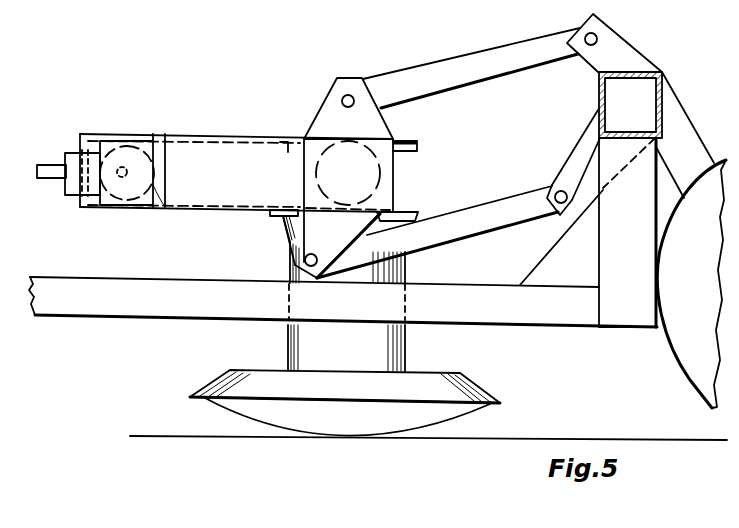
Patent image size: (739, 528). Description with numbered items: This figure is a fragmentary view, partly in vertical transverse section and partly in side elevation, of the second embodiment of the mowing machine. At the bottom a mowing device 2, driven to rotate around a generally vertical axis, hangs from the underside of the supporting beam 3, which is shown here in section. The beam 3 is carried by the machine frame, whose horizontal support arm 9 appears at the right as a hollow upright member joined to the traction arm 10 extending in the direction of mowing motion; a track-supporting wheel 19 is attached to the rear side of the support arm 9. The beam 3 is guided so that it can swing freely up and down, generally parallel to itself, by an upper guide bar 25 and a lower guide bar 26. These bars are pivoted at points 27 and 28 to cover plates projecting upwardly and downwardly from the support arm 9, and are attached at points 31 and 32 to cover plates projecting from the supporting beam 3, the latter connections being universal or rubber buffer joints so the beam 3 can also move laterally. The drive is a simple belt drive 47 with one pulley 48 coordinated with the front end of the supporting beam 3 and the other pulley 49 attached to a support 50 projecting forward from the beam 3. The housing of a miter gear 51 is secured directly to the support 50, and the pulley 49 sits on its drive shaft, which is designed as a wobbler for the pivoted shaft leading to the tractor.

The mowing device 2 is at (458, 375).
The supporting beam 3 is at (387, 164).
The support arm 9 is at (660, 100).
The traction arm 10 is at (105, 307).
The track-supporting wheel 19 is at (686, 376).
The upper guide bar 25 is at (398, 80).
The lower guide bar 26 is at (497, 206).
The pivot point 27 is at (598, 39).
The pivot point 28 is at (569, 199).
The attachment point 31 is at (342, 97).
The attachment point 32 is at (305, 260).
The belt drive 47 is at (173, 135).
The belt pulley 48 is at (418, 143).
The belt pulley 49 is at (92, 178).
The support 50 is at (243, 135).
The miter gear 51 is at (160, 196).